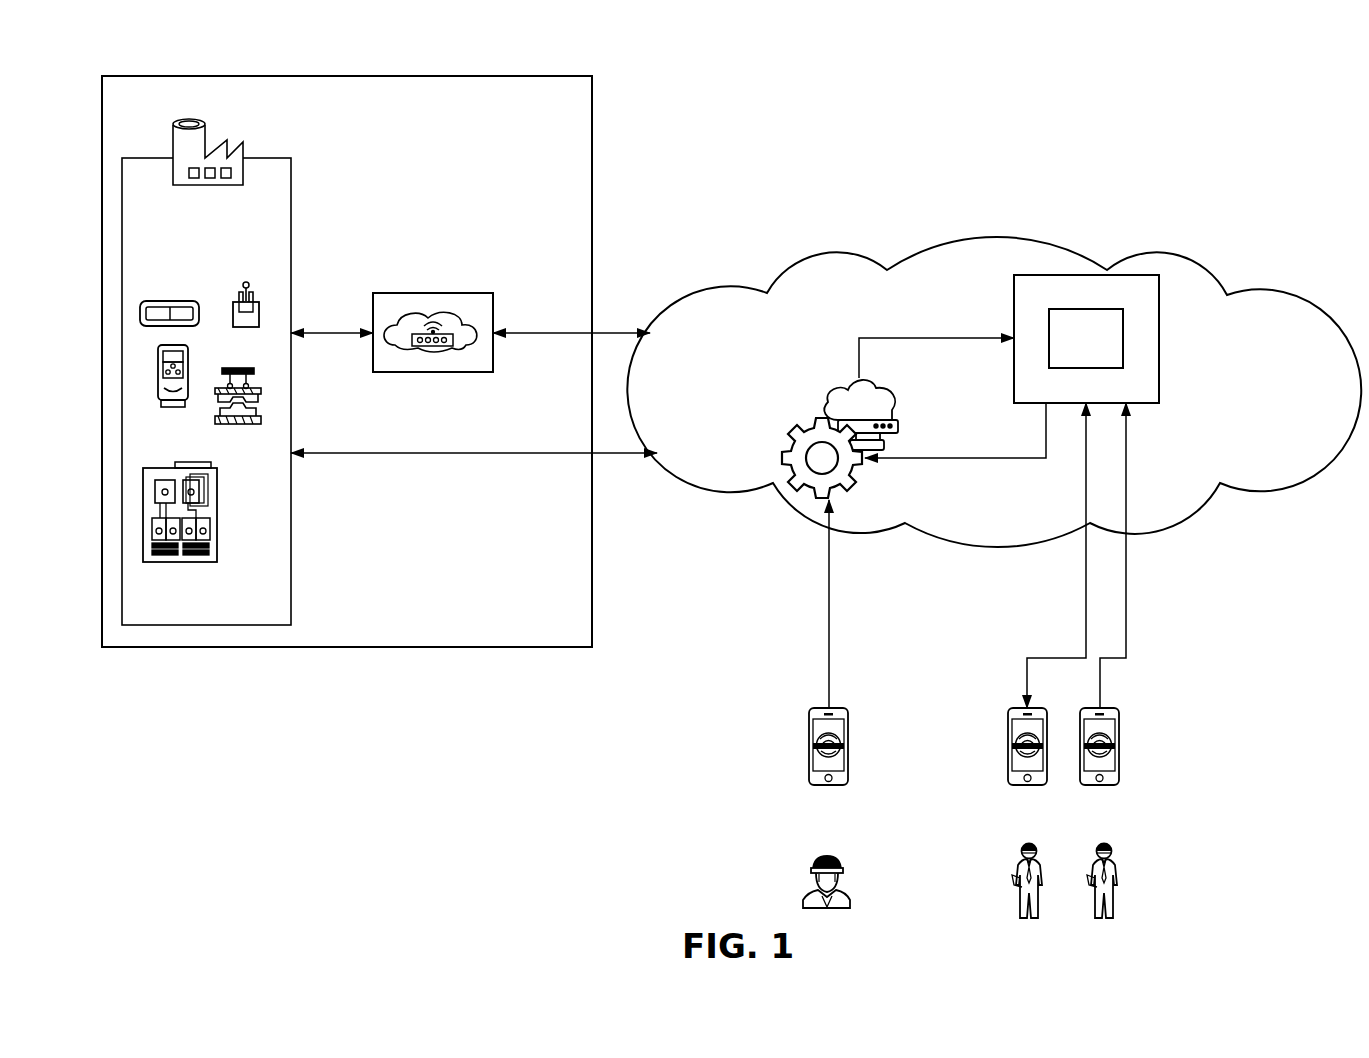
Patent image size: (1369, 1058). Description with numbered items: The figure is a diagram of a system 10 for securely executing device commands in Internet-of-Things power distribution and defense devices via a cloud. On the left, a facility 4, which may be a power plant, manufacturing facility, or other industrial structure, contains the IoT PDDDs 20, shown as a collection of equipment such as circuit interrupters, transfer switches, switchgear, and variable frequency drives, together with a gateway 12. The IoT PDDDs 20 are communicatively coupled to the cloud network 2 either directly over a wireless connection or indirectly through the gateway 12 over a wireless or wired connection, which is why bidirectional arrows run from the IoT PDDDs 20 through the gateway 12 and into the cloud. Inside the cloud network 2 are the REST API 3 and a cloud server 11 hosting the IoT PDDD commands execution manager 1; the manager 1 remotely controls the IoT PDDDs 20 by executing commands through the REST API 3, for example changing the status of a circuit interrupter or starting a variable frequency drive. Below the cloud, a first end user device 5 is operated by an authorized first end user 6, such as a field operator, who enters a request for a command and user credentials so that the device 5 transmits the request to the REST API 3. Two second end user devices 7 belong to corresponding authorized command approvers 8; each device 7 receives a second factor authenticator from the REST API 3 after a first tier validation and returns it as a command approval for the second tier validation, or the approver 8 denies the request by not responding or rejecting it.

The IoT PDDD commands execution manager 1 is at (1085, 309).
The cloud network 2 is at (835, 252).
The REST API 3 is at (840, 385).
The facility 4 is at (140, 76).
The first end user device 5 is at (848, 745).
The first end user 6 is at (825, 855).
The second end user devices 7 is at (1008, 745).
The command approvers 8 is at (1012, 880).
The system 10 is at (698, 78).
The cloud server 11 is at (1052, 275).
The gateway 12 is at (425, 293).
The IoT power distribution and defense devices (PDDDs) 20 is at (148, 158).